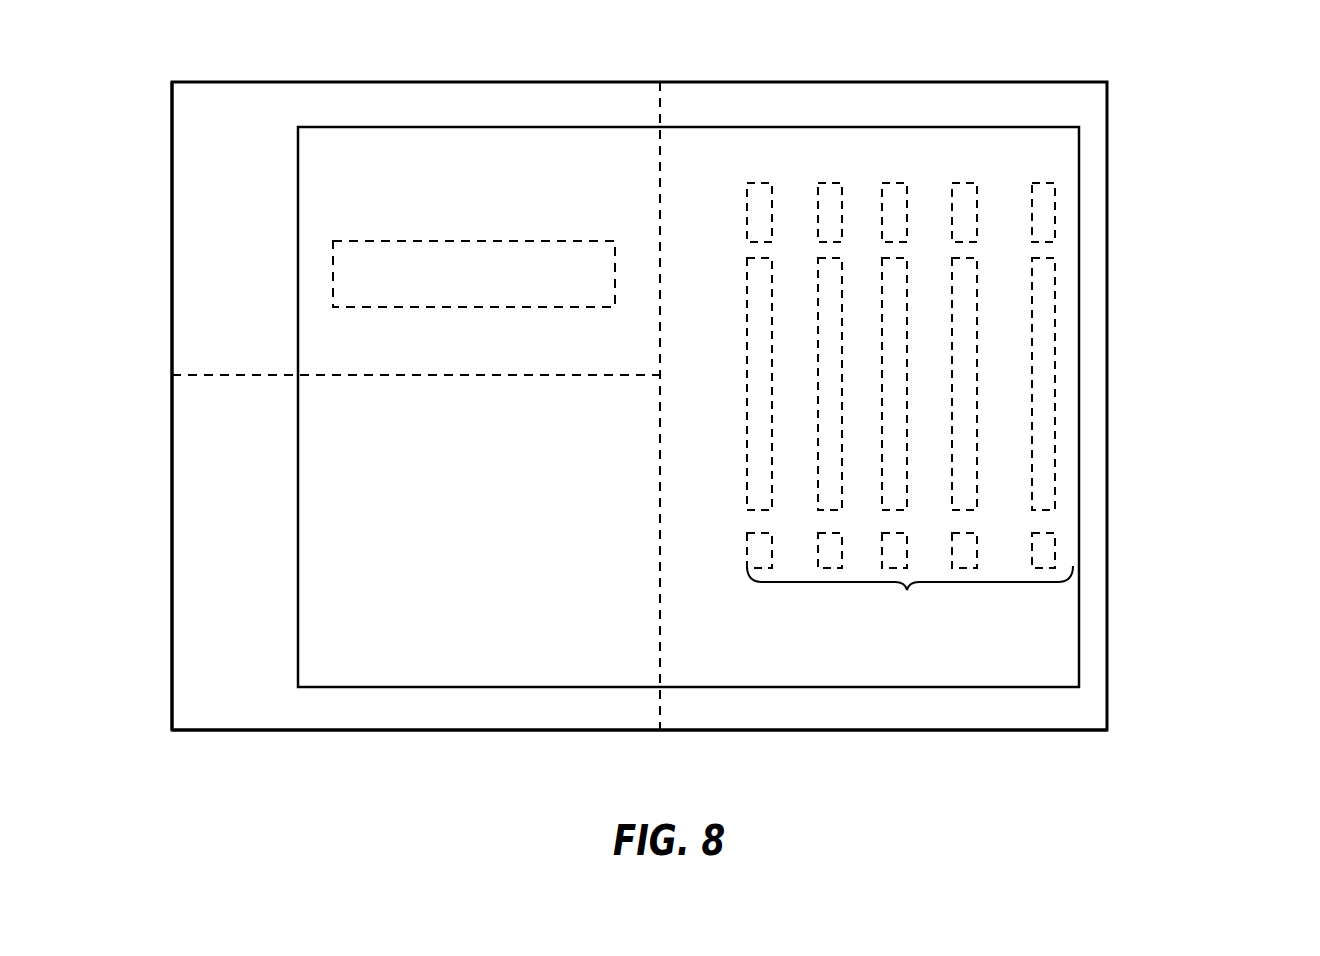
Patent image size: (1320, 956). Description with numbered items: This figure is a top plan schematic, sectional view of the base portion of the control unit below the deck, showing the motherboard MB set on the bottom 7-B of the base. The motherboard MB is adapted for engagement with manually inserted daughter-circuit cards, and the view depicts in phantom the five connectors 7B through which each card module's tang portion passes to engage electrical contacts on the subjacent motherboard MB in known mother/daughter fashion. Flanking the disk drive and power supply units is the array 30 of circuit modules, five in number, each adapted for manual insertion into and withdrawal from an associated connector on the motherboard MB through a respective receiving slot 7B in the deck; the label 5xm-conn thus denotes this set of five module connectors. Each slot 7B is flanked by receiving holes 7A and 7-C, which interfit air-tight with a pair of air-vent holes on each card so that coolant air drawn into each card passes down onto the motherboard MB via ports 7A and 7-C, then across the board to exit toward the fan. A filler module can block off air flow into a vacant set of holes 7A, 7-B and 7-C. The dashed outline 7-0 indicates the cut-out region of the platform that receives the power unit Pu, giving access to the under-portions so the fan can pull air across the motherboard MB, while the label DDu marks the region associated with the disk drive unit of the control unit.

The processing unit Pu is at (492, 88).
The bottom of base 7-B is at (1092, 731).
The motherboard MB is at (1045, 653).
The disk drive unit DDu is at (216, 463).
The connector block 7-0 is at (474, 274).
The receiving hole 7-C is at (752, 221).
The receiving slot 7B is at (750, 406).
The receiving hole 7A is at (752, 542).
The five m-connectors 5xm-conn is at (979, 375).
The array of circuit modules 30 is at (910, 597).